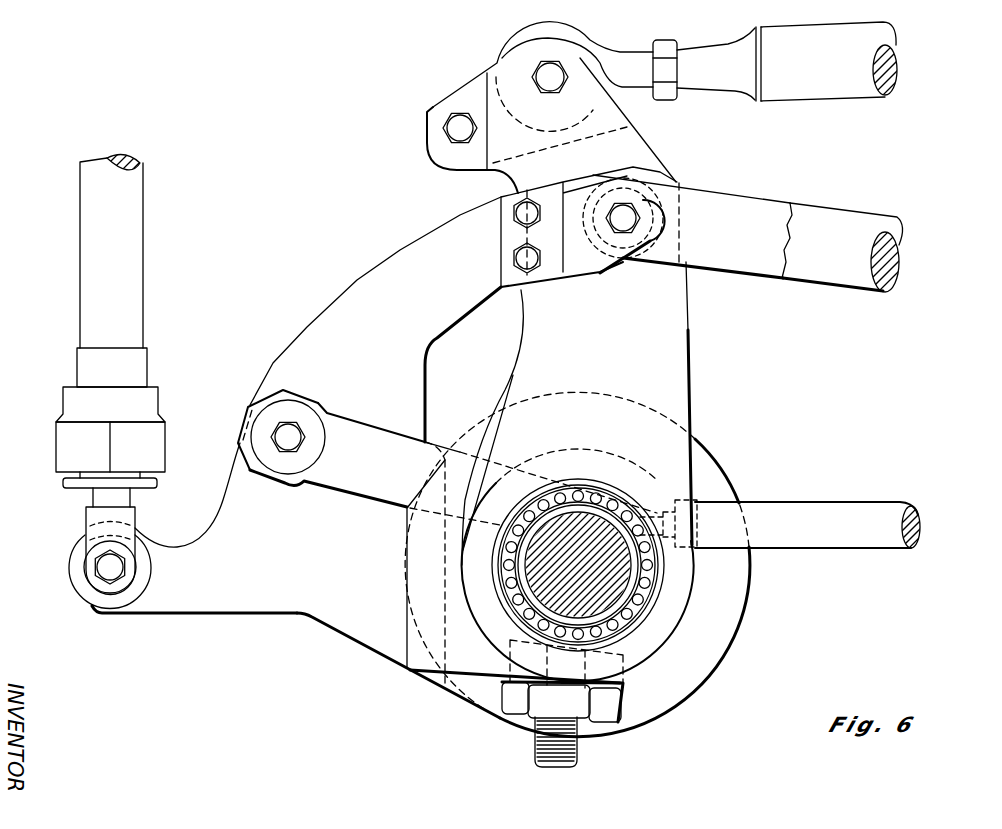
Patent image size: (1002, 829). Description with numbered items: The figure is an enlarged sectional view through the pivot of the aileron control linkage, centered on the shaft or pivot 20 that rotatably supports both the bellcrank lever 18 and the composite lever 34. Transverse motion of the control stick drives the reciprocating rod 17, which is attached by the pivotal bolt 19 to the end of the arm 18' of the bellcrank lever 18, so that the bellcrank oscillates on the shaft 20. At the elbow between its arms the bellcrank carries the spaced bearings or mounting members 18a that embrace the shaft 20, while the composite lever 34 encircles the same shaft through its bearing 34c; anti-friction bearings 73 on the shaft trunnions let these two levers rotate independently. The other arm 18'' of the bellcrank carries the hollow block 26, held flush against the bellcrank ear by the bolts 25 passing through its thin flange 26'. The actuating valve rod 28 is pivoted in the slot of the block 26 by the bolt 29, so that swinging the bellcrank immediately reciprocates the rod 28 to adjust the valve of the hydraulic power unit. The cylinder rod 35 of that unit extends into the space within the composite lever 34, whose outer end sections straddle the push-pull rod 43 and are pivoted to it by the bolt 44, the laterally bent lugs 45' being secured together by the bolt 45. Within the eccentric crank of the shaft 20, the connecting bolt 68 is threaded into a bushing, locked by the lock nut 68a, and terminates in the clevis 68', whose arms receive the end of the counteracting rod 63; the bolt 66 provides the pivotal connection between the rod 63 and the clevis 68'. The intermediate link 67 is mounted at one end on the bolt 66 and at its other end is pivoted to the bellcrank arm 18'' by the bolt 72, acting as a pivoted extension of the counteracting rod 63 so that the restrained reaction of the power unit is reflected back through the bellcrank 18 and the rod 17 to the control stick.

The reciprocating rod 17 is at (118, 288).
The bellcrank lever 18 is at (458, 580).
The arm of bellcrank lever 18' is at (194, 548).
The arm of bellcrank lever 18'' is at (375, 299).
The bearings or mounting members 18a is at (660, 490).
The bolt or pivotal connection 19 is at (108, 572).
The shaft or pivot 20 is at (523, 600).
The bolts 25 is at (515, 262).
The hollow block 26 is at (590, 238).
The flange 26' is at (501, 223).
The actuating valve rod 28 is at (758, 265).
The bolt 29 is at (632, 210).
The composite lever 34 is at (690, 392).
The bearing 34c is at (672, 630).
The cylinder rod 35 is at (840, 275).
The push-pull rod 43 is at (858, 85).
The bolt 44 is at (545, 75).
The bolt or fastening means 45 is at (436, 121).
The lug 45' is at (530, 125).
The counteracting rod 63 is at (890, 492).
The bolt 66 is at (592, 500).
The intermediate link 67 is at (383, 443).
The connecting bolt 68 is at (576, 743).
The clevis 68' is at (559, 565).
The lock nut 68a is at (618, 697).
The bolt 72 is at (290, 433).
The anti-friction bearings 73 is at (630, 583).